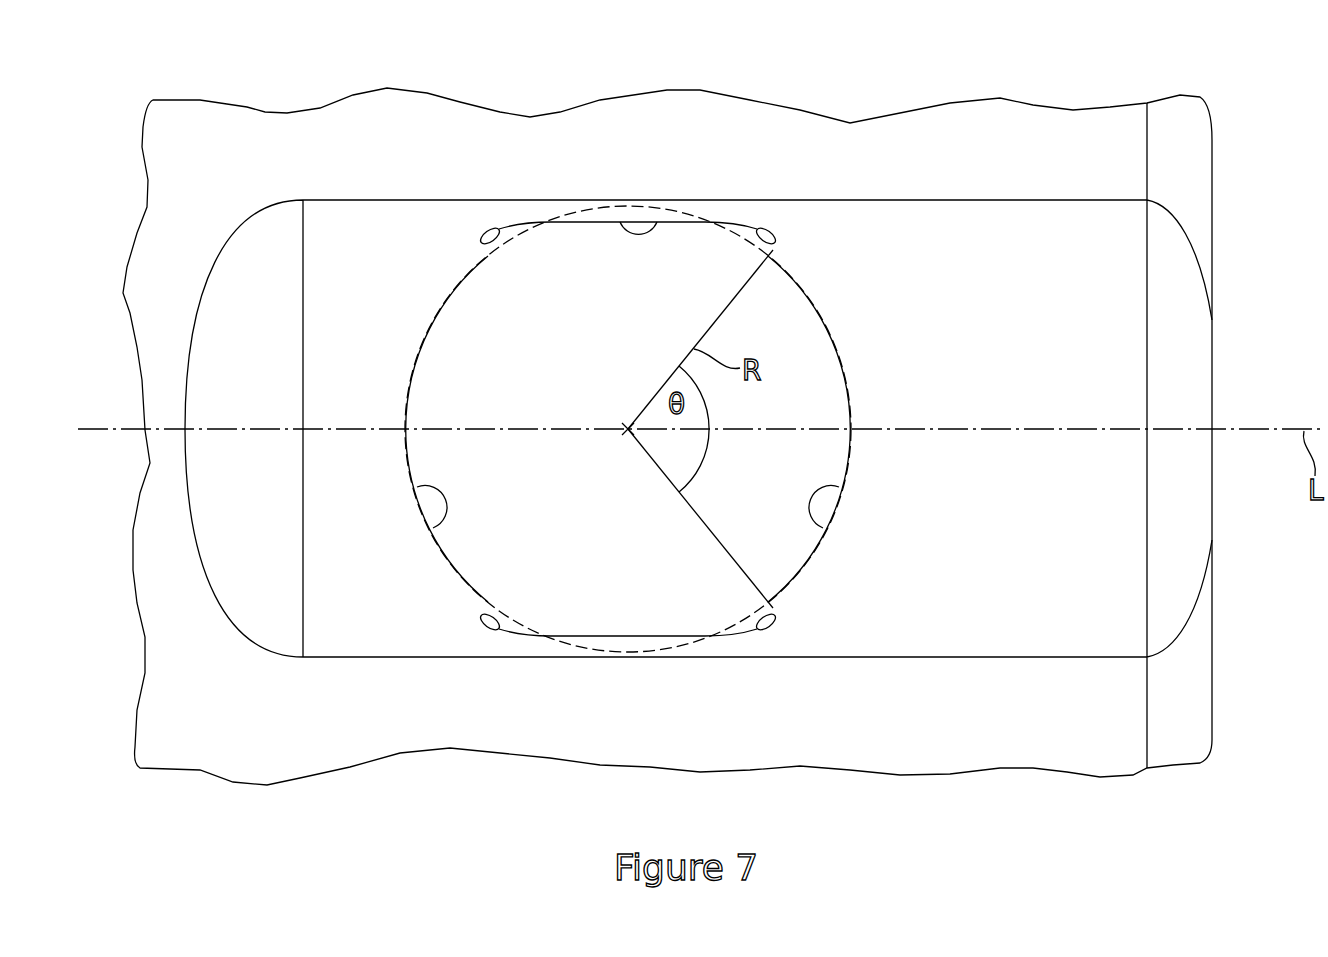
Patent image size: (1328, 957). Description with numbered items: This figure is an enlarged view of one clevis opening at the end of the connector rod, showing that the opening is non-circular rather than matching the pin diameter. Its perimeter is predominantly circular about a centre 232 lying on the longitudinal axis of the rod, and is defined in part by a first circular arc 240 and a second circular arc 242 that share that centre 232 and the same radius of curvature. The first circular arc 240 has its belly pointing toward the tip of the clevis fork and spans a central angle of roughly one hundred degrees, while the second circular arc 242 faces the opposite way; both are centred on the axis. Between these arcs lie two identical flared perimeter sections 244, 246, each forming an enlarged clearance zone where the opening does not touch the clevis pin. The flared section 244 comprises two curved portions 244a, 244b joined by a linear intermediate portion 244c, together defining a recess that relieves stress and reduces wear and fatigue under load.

The centre 232 is at (617, 445).
The first circular arc 240 is at (830, 484).
The second circular arc 242 is at (430, 518).
The flared perimeter section 244 is at (745, 217).
The curved portion 244a is at (774, 245).
The curved portion 244b is at (482, 245).
The intermediate portion 244c is at (658, 222).
The flared perimeter section 246 is at (756, 638).